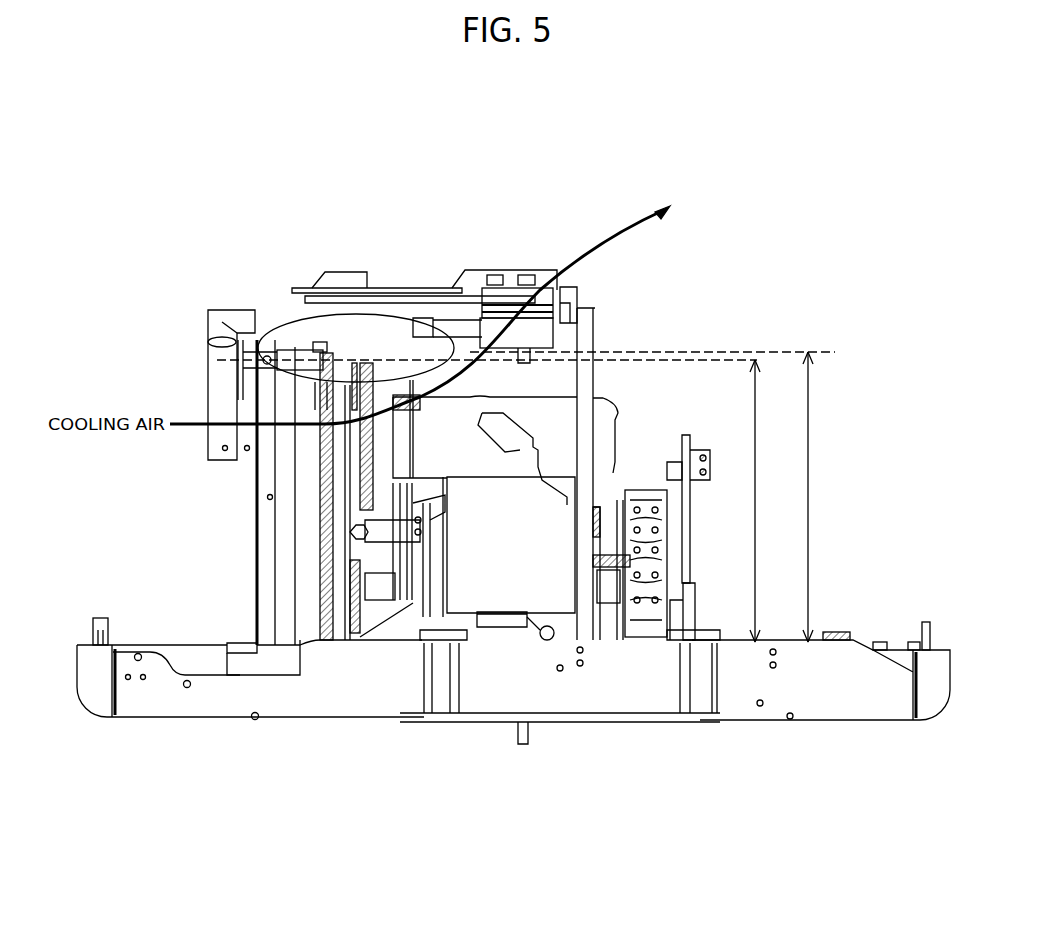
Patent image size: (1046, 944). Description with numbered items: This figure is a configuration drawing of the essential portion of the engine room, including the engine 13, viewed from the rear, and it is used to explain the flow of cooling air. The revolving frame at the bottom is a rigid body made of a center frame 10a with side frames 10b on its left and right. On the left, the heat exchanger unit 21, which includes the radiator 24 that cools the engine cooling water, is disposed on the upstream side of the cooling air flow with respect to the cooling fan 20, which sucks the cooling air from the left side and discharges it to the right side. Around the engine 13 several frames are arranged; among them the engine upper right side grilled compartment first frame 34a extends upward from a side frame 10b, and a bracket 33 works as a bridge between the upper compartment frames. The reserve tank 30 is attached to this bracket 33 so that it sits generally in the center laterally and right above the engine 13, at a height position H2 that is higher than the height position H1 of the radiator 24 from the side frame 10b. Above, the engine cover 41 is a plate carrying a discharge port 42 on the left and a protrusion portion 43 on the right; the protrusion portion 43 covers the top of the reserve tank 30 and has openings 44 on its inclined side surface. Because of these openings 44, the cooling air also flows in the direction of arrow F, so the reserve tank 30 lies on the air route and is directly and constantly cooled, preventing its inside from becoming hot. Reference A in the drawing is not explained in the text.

The center frame 10a is at (433, 697).
The side frame 10b is at (290, 710).
The engine 13 is at (618, 412).
The cooling fan 20 is at (322, 550).
The heat exchanger unit 21 is at (257, 480).
The radiator 24 is at (222, 372).
The reserve tank 30 is at (500, 297).
The bracket 33 is at (597, 312).
The engine upper right side grilled compartment first frame 34a is at (600, 337).
The engine cover 41 is at (428, 285).
The discharge port 42 is at (362, 290).
The protrusion portion 43 is at (503, 297).
The openings 44 is at (558, 284).
The fan rotation axis A is at (300, 320).
The arrow F is at (427, 304).
The height position H1 is at (740, 501).
The height position H2 is at (795, 497).